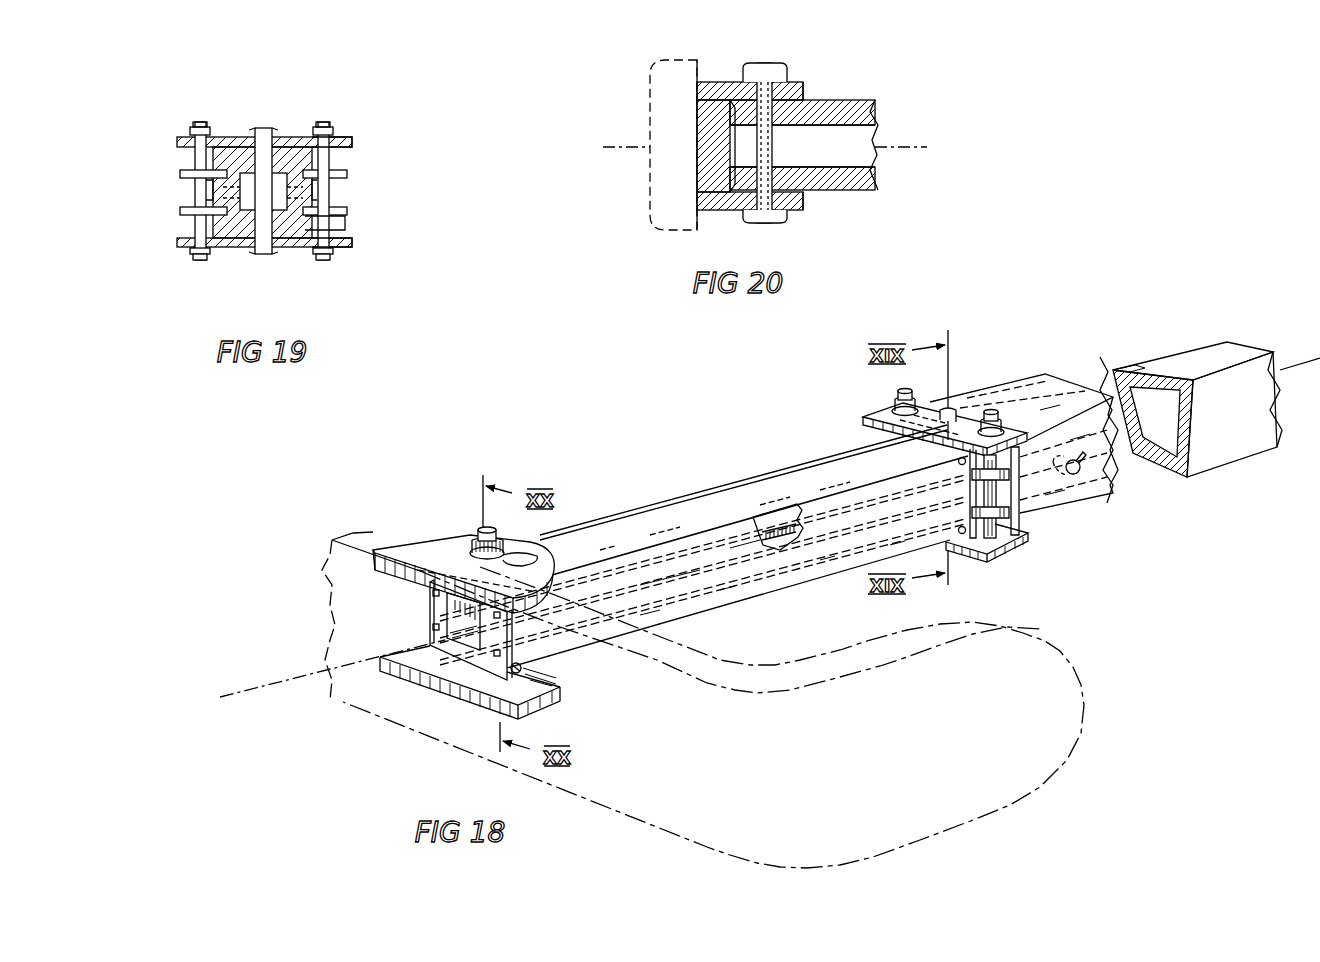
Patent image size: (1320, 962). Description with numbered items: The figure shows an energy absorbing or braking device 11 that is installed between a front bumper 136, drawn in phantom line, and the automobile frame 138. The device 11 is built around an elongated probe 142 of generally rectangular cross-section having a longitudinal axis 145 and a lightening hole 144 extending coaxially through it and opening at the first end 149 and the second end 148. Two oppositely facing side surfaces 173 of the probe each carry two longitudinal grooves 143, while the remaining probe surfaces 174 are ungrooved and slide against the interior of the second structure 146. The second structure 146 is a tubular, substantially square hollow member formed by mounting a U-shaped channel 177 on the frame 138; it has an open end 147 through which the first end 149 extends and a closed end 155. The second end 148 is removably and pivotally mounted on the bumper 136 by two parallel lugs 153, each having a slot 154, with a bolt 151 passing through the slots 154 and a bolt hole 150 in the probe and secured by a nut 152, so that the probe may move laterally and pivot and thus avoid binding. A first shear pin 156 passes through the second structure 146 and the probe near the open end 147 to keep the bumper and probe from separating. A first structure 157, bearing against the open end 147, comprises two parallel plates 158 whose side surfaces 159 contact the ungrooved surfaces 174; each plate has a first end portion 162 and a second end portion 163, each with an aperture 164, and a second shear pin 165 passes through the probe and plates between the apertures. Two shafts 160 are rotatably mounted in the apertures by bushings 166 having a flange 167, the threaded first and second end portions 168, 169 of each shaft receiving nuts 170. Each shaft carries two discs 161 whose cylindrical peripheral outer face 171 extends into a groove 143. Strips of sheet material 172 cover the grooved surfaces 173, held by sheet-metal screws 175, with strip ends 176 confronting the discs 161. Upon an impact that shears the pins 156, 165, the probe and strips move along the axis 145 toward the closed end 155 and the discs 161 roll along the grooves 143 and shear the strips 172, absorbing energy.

In FIG. 18, the device 11 is at (668, 440).
In FIG. 20, the front bumper 136 is at (664, 60).
In FIG. 18, the front bumper 136 is at (1083, 690).
In FIG. 18, the automobile frame 138 is at (1262, 350).
In FIG. 18, the probe 142 is at (662, 520).
In FIG. 18, the grooves 143 is at (757, 582).
In FIG. 20, the lightening hole 144 is at (848, 157).
In FIG. 18, the lightening hole 144 is at (460, 611).
In FIG. 20, the longitudinal axis 145 is at (625, 147).
In FIG. 18, the longitudinal axis 145 is at (290, 678).
In FIG. 18, the second structure 146 is at (1020, 376).
In FIG. 18, the open end 147 is at (1017, 510).
In FIG. 20, the second end 148 is at (725, 100).
In FIG. 18, the second end 148 is at (463, 655).
In FIG. 18, the first end 149 is at (1110, 450).
In FIG. 20, the bolt hole 150 is at (770, 115).
In FIG. 20, the bolt 151 is at (770, 216).
In FIG. 20, the nut 152 is at (790, 70).
In FIG. 20, the lugs 153 is at (727, 210).
In FIG. 18, the lugs 153 is at (438, 537).
In FIG. 18, the slot 154 is at (532, 550).
In FIG. 18, the closed end 155 is at (1185, 352).
In FIG. 18, the first shear pin 156 is at (1077, 476).
In FIG. 19, the first structure 157 is at (172, 150).
In FIG. 18, the first structure 157 is at (861, 416).
In FIG. 19, the plates 158 is at (223, 137).
In FIG. 18, the plates 158 is at (1002, 557).
In FIG. 19, the side surface 159 is at (287, 157).
In FIG. 19, the shafts 160 is at (333, 158).
In FIG. 18, the shafts 160 is at (1012, 552).
In FIG. 19, the discs 161 is at (343, 175).
In FIG. 18, the discs 161 is at (982, 545).
In FIG. 19, the first end portion 162 is at (343, 137).
In FIG. 19, the second end portion 163 is at (180, 140).
In FIG. 19, the aperture 164 is at (330, 240).
In FIG. 19, the second shear pin 165 is at (262, 256).
In FIG. 18, the second shear pin 165 is at (950, 412).
In FIG. 19, the bushings 166 is at (180, 241).
In FIG. 19, the flange 167 is at (187, 250).
In FIG. 19, the first end portion 168 is at (323, 128).
In FIG. 19, the second end portion 169 is at (323, 263).
In FIG. 19, the nuts 170 is at (337, 253).
In FIG. 19, the peripheral outer face 171 is at (337, 208).
In FIG. 18, the strips of sheet material 172 is at (624, 512).
In FIG. 19, the side surfaces 173 is at (313, 223).
In FIG. 18, the side surfaces 173 is at (772, 515).
In FIG. 19, the probe surfaces 174 is at (240, 137).
In FIG. 20, the probe surfaces 174 is at (840, 100).
In FIG. 18, the probe surfaces 174 is at (734, 492).
In FIG. 18, the sheet-metal screws 175 is at (548, 672).
In FIG. 18, the strip ends 176 is at (973, 493).
In FIG. 18, the U-shaped channel 177 is at (1122, 350).